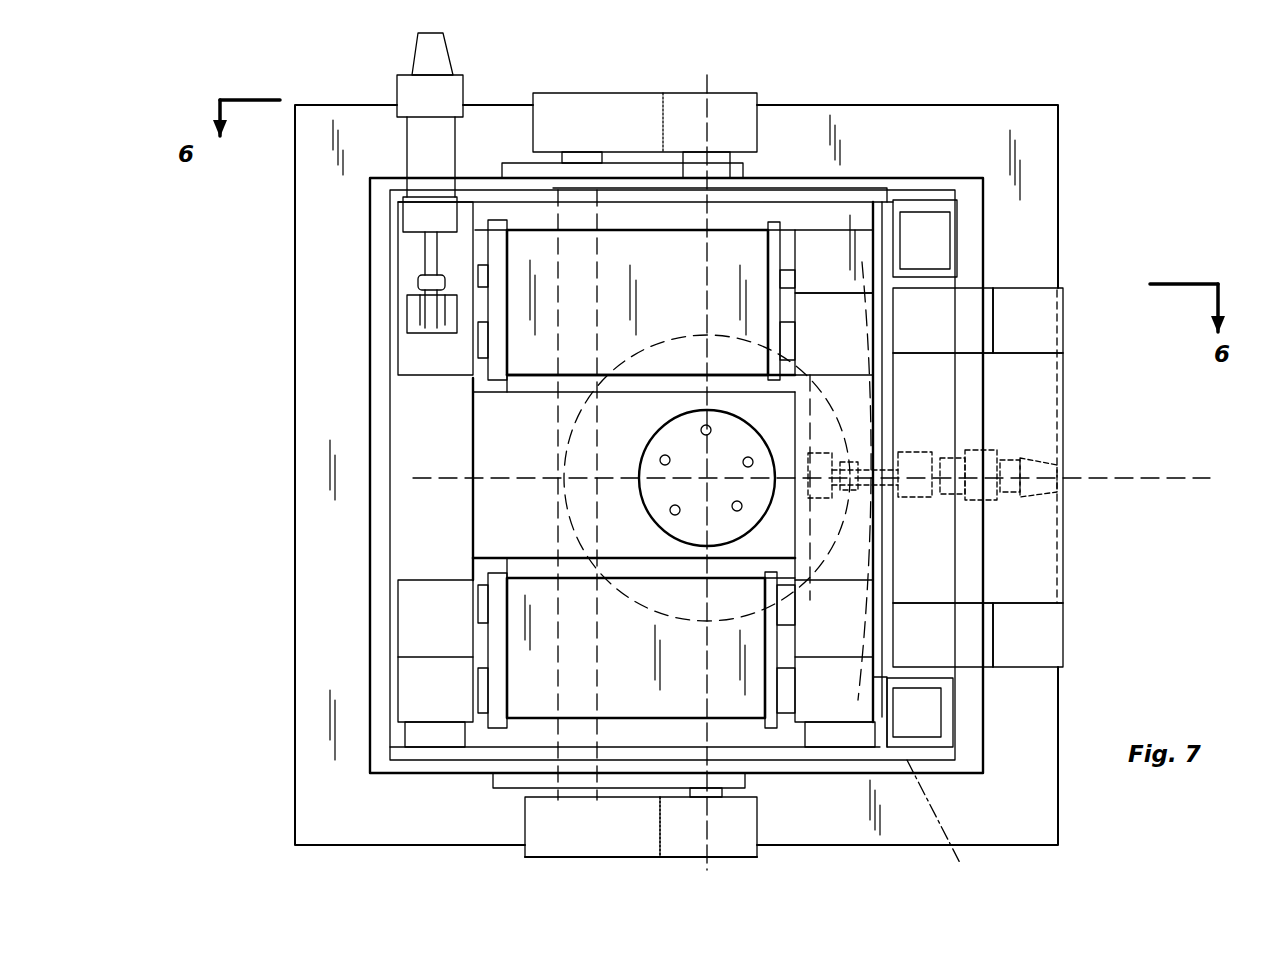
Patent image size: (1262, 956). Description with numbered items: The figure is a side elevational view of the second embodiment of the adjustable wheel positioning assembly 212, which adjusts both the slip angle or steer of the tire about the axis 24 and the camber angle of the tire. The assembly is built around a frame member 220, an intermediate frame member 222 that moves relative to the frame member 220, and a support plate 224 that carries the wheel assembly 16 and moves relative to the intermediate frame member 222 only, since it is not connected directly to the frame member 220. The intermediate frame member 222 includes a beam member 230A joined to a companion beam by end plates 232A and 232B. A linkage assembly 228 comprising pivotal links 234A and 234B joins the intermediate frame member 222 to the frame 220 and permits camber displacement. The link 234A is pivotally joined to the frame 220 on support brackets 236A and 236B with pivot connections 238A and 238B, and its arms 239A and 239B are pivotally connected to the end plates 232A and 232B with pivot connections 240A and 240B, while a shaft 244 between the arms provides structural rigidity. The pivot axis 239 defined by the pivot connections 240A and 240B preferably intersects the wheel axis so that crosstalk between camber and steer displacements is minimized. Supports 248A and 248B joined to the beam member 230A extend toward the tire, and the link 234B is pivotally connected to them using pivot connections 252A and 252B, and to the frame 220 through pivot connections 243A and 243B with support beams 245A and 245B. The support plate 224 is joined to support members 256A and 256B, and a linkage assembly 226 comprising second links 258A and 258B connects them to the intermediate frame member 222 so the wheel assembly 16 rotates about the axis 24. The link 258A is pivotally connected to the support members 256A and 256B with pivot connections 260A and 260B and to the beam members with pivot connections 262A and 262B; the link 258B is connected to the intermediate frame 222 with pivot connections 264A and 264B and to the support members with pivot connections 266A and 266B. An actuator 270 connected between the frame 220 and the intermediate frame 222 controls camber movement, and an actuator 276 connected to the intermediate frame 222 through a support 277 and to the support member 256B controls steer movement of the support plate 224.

The wheel assembly 16 is at (628, 459).
The axis 24 is at (1168, 478).
The adjustable wheel positioning assembly 212 is at (779, 90).
The frame member 220 is at (1070, 188).
The intermediate frame member 222 is at (880, 246).
The support plate 224 is at (507, 553).
The linkage assembly 226 is at (437, 117).
The linkage assembly 228 is at (1077, 268).
The beam member 230A is at (893, 397).
The end plate 232A is at (488, 218).
The end plate 232B is at (818, 775).
The link 234A is at (600, 70).
The link 234B is at (1065, 372).
The support bracket 236A is at (477, 177).
The support bracket 236B is at (502, 788).
The pivot connection 238A is at (575, 88).
The pivot connection 238B is at (591, 860).
The pivot axis 239 is at (702, 870).
The arm 239A is at (650, 93).
The arm 239B is at (618, 863).
The pivot connection 240A is at (723, 86).
The pivot connection 240B is at (738, 863).
The pivot connection 243A is at (1026, 284).
The pivot connection 243B is at (946, 672).
The shaft 244 is at (558, 403).
The support beam 245A is at (1065, 297).
The support beam 245B is at (1065, 615).
The support 248A is at (939, 197).
The support 248B is at (957, 703).
The pivot connection 252A is at (965, 280).
The pivot connection 252B is at (1046, 672).
The support member 256A is at (873, 520).
The support member 256B is at (507, 577).
The link 258A is at (758, 230).
The link 258B is at (545, 720).
The pivot connection 260A is at (386, 272).
The pivot connection 260B is at (893, 350).
The pivot connection 262A is at (383, 221).
The pivot connection 262B is at (897, 291).
The pivot connection 264A is at (849, 733).
The pivot connection 264B is at (428, 729).
The pivot connection 266A is at (893, 577).
The pivot connection 266B is at (396, 622).
The actuator 270 is at (1010, 452).
The actuator 276 is at (405, 140).
The support 277 is at (398, 200).